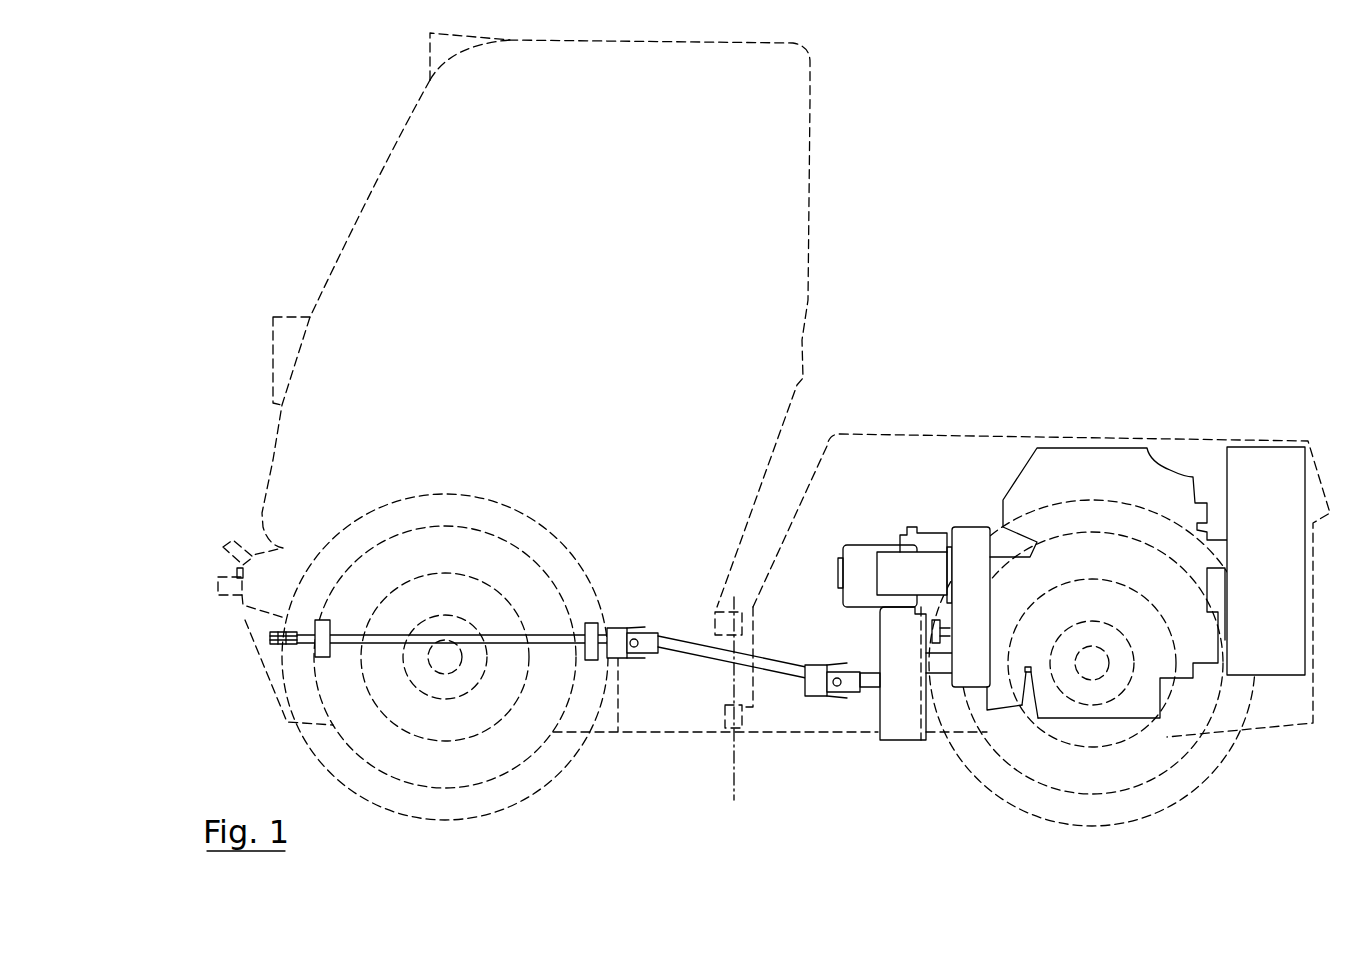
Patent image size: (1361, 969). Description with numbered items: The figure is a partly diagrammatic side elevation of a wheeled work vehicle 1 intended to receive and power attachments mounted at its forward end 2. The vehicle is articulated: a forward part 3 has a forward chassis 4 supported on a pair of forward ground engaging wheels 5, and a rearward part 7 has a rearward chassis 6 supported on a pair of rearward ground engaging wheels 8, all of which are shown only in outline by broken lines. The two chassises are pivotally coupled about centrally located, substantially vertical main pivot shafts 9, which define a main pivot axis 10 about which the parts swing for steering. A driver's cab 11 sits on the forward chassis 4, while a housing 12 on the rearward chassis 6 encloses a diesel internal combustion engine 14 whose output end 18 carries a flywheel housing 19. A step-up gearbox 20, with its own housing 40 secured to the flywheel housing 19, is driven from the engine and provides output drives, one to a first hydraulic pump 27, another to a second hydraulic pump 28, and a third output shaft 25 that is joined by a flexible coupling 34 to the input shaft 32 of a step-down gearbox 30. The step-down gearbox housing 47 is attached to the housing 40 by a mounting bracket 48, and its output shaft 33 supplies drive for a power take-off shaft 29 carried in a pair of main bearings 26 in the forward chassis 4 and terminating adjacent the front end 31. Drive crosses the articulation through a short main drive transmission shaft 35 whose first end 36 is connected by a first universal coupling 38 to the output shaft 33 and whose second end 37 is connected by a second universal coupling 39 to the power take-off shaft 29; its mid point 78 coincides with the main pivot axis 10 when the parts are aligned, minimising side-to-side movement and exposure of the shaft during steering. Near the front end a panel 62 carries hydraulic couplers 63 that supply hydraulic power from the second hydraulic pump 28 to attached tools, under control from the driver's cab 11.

The work vehicle 1 is at (968, 258).
The forward end 2 is at (247, 623).
The forward part 3 is at (630, 732).
The forward chassis 4 is at (660, 732).
The forward ground engaging wheels 5 is at (420, 785).
The rearward chassis 6 is at (823, 737).
The rearward part 7 is at (1243, 440).
The rearward ground engaging wheels 8 is at (1165, 773).
The main pivot shafts 9 is at (743, 623).
The main pivot axis 10 is at (730, 783).
The driver's cab 11 is at (370, 175).
The housing 12 is at (1180, 440).
The internal combustion engine 14 is at (1080, 448).
The output end 18 is at (1027, 677).
The flywheel housing 19 is at (1020, 708).
The step-up gearbox 20 is at (963, 527).
The third output shaft 25 is at (943, 630).
The main bearings 26 is at (327, 625).
The first hydraulic pump 27 is at (862, 553).
The second hydraulic pump 28 is at (888, 551).
The power take-off shaft 29 is at (302, 642).
The step-down gearbox 30 is at (895, 718).
The front end 31 is at (243, 608).
The input shaft 32 is at (932, 623).
The output shaft 33 is at (867, 683).
The flexible coupling 34 is at (963, 622).
The main drive transmission shaft 35 is at (693, 643).
The first end 36 is at (805, 675).
The second end 37 is at (657, 653).
The first universal coupling 38 is at (832, 663).
The second universal coupling 39 is at (613, 628).
The housing 40 is at (972, 527).
The housing 47 is at (912, 737).
The mounting bracket 48 is at (933, 675).
The panel 62 is at (242, 573).
The hydraulic couplers 63 is at (226, 552).
The mid point 78 is at (737, 658).